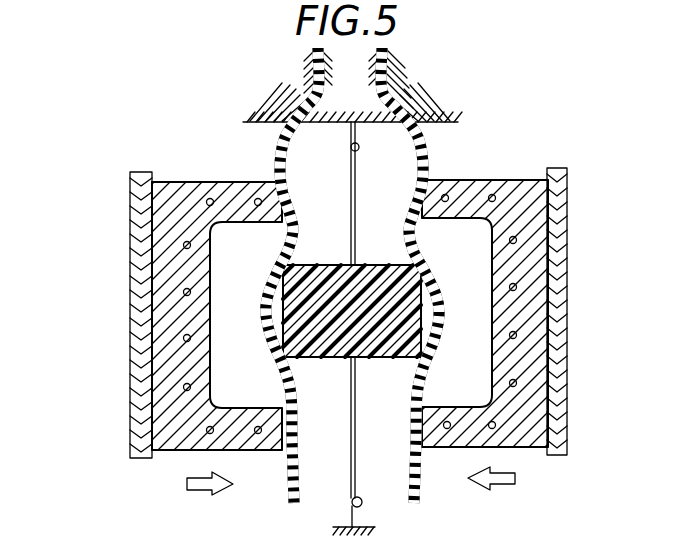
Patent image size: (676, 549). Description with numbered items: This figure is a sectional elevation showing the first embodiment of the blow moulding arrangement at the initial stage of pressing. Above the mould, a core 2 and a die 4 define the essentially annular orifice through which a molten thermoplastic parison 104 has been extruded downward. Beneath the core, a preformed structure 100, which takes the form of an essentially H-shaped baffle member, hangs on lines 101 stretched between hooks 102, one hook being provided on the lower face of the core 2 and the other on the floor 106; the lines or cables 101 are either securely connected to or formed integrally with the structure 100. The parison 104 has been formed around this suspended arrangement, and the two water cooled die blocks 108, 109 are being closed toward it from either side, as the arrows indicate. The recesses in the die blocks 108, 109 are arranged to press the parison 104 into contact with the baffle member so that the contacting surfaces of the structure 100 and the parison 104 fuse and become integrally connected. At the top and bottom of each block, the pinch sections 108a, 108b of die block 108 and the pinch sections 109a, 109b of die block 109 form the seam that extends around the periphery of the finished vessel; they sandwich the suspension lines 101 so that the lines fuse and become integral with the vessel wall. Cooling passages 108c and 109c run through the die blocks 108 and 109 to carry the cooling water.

The core 2 is at (362, 66).
The die 4 is at (462, 101).
The preformed structure 100 is at (421, 264).
The lines 101 is at (356, 182).
The hooks 102 is at (350, 146).
The parison 104 is at (438, 327).
The floor 106 is at (365, 523).
The die block 108 is at (163, 338).
The pinch section 108a is at (267, 181).
The pinch section 108b is at (262, 452).
The cooling passages 108c is at (183, 291).
The die block 109 is at (529, 327).
The pinch section 109a is at (442, 178).
The pinch section 109b is at (440, 452).
The cooling passages 109c is at (517, 287).